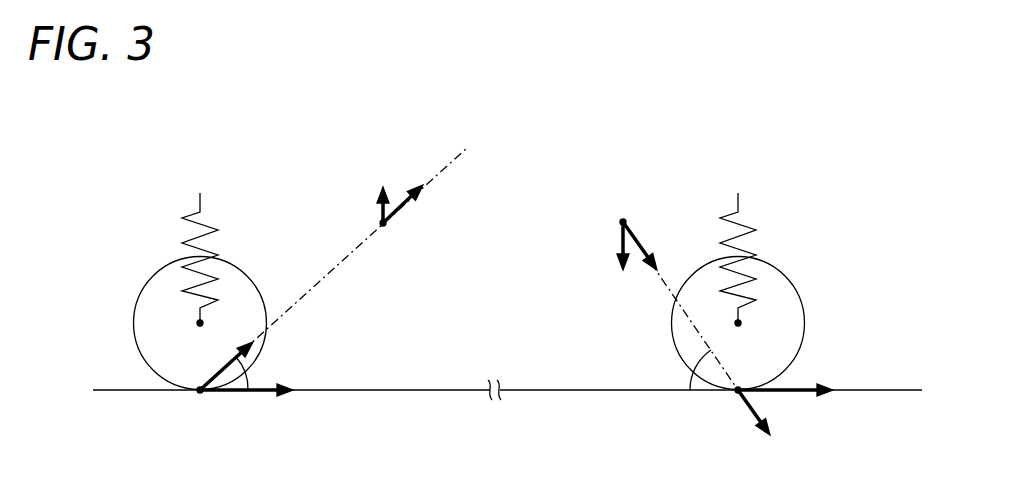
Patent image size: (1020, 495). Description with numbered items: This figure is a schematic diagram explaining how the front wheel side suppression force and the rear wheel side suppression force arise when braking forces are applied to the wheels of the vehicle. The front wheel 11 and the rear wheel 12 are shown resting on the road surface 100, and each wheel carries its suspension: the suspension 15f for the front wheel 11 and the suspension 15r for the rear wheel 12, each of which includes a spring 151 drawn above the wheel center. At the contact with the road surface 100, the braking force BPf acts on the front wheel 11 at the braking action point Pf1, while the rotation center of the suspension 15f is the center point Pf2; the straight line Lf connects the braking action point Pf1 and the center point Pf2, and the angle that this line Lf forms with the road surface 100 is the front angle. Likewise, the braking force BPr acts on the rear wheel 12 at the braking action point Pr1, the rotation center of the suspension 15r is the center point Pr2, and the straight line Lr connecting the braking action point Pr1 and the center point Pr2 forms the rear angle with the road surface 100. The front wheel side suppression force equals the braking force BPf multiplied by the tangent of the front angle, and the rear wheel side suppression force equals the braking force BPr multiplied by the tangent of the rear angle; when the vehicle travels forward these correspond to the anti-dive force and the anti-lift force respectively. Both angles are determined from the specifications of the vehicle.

The road surface 100 is at (547, 388).
The front wheel 11 is at (133, 322).
The rear wheel 12 is at (805, 323).
The spring 151 is at (212, 224).
The suspension for the front wheel 15f is at (134, 198).
The suspension for the rear wheel 15r is at (820, 193).
The braking action point Pf1 is at (195, 393).
The center point Pf2 is at (390, 226).
The braking force BPf is at (260, 393).
The straight line Lf is at (320, 283).
The braking action point Pr1 is at (735, 393).
The center point Pr2 is at (622, 220).
The braking force BPr is at (798, 388).
The straight line Lr is at (660, 285).